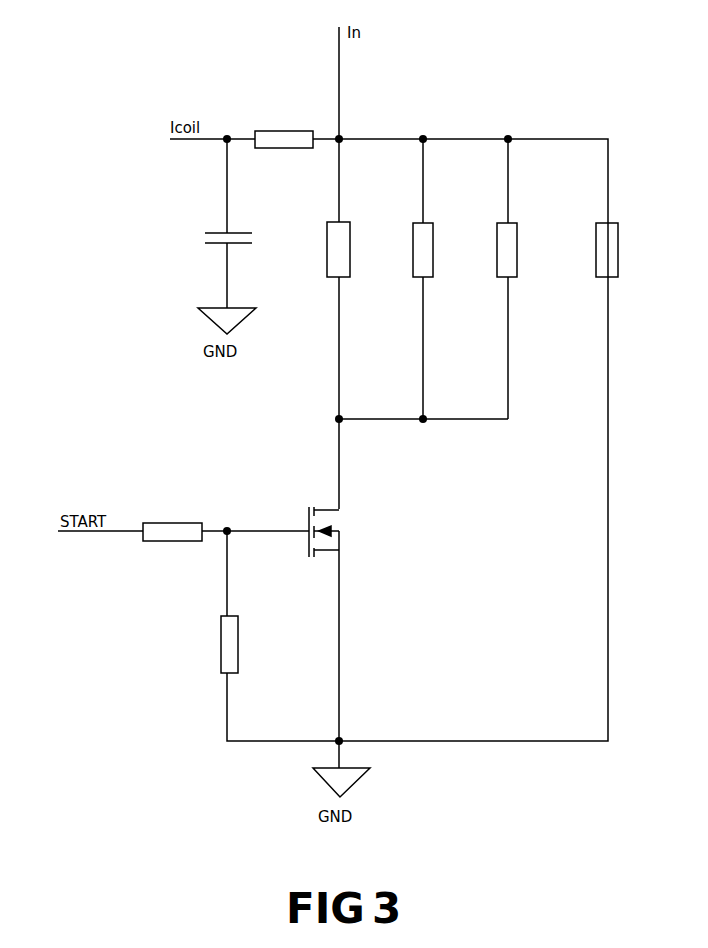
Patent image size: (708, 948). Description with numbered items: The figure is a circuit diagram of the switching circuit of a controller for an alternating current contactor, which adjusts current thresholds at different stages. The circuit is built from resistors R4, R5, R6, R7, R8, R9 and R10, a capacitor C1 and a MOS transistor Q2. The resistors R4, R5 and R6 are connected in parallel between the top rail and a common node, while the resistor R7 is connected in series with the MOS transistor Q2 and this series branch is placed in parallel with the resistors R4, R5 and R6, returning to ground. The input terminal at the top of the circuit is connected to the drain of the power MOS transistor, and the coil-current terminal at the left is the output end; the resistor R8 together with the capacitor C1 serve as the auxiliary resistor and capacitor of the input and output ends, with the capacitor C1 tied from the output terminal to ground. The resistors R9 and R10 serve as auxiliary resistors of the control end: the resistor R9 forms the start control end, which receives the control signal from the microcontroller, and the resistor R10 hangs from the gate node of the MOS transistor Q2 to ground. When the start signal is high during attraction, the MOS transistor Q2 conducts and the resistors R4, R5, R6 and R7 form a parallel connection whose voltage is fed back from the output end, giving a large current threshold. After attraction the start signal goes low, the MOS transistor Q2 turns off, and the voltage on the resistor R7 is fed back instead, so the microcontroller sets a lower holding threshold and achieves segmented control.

The resistor R4 is at (351, 249).
The resistor R5 is at (435, 250).
The resistor R6 is at (519, 250).
The resistor R7 is at (618, 250).
The resistor R8 is at (283, 129).
The resistor R9 is at (172, 520).
The resistor R10 is at (246, 644).
The capacitor C1 is at (205, 242).
The MOS transistor Q2 is at (350, 527).